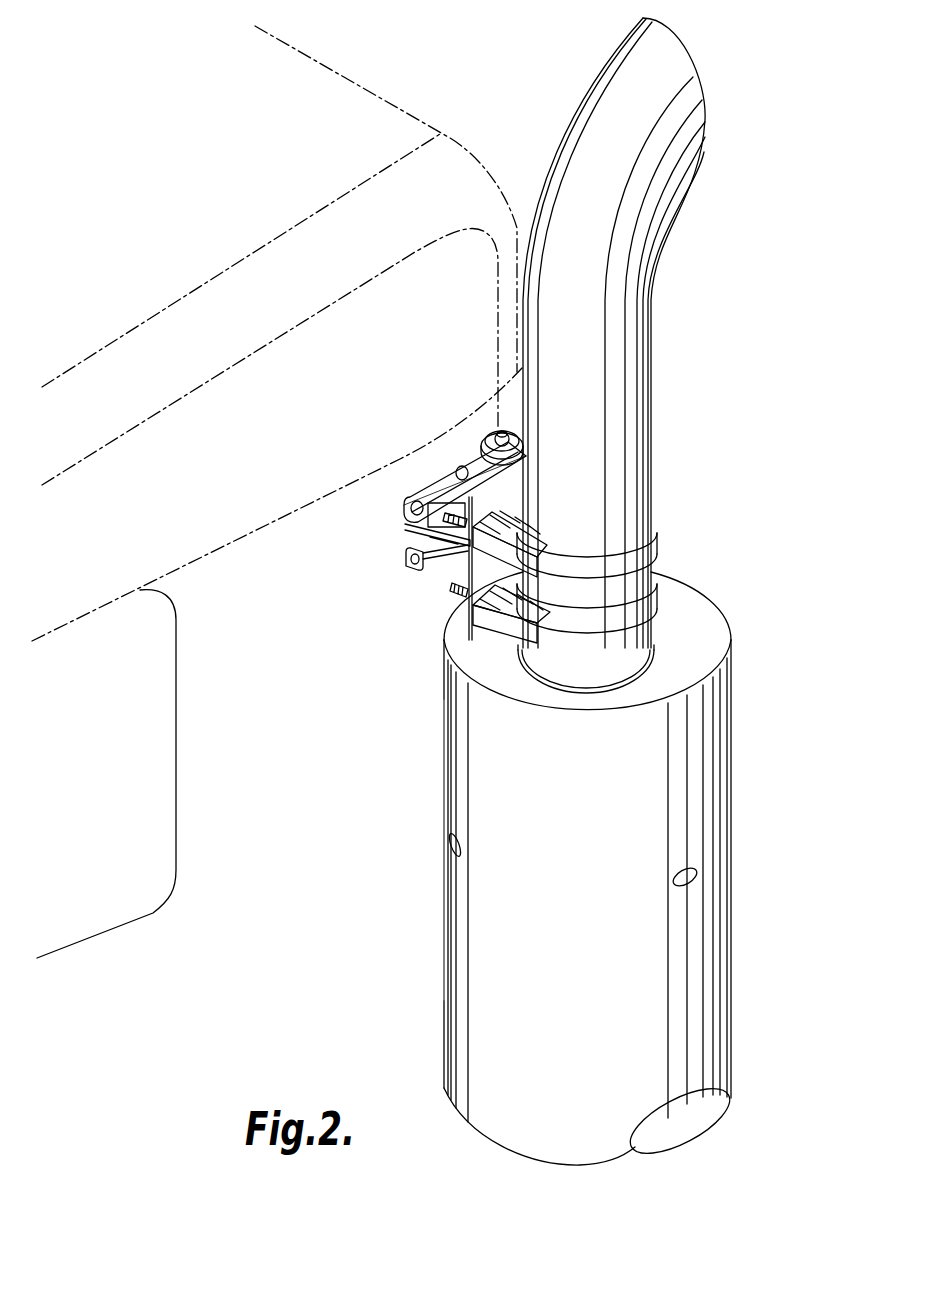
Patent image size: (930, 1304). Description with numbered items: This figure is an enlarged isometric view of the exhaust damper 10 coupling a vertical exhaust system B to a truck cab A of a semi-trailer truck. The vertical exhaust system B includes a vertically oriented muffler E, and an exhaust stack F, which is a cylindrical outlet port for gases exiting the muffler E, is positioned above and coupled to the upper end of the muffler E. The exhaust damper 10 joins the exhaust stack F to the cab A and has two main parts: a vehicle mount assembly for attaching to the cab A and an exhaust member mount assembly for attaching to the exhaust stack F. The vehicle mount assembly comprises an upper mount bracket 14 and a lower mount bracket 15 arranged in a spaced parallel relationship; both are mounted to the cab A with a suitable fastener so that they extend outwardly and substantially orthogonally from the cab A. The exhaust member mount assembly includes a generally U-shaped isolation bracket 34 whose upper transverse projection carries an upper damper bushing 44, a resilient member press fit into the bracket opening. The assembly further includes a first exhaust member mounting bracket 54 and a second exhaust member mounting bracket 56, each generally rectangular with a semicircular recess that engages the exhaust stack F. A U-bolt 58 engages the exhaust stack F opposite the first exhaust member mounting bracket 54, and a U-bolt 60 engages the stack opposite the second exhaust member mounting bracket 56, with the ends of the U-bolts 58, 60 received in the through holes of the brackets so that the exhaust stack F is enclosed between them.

The exhaust damper 10 is at (485, 422).
The upper mount bracket 14 is at (413, 522).
The lower mount bracket 15 is at (432, 548).
The isolation bracket 34 is at (418, 503).
The upper damper bushing 44 is at (468, 430).
The first exhaust member mounting bracket 54 is at (493, 520).
The second exhaust member mounting bracket 56 is at (473, 600).
The U-bolt 58 is at (653, 553).
The U-bolt 60 is at (653, 601).
The truck cab A is at (357, 112).
The vertical exhaust system B is at (751, 697).
The muffler E is at (683, 832).
The exhaust stack F is at (627, 422).